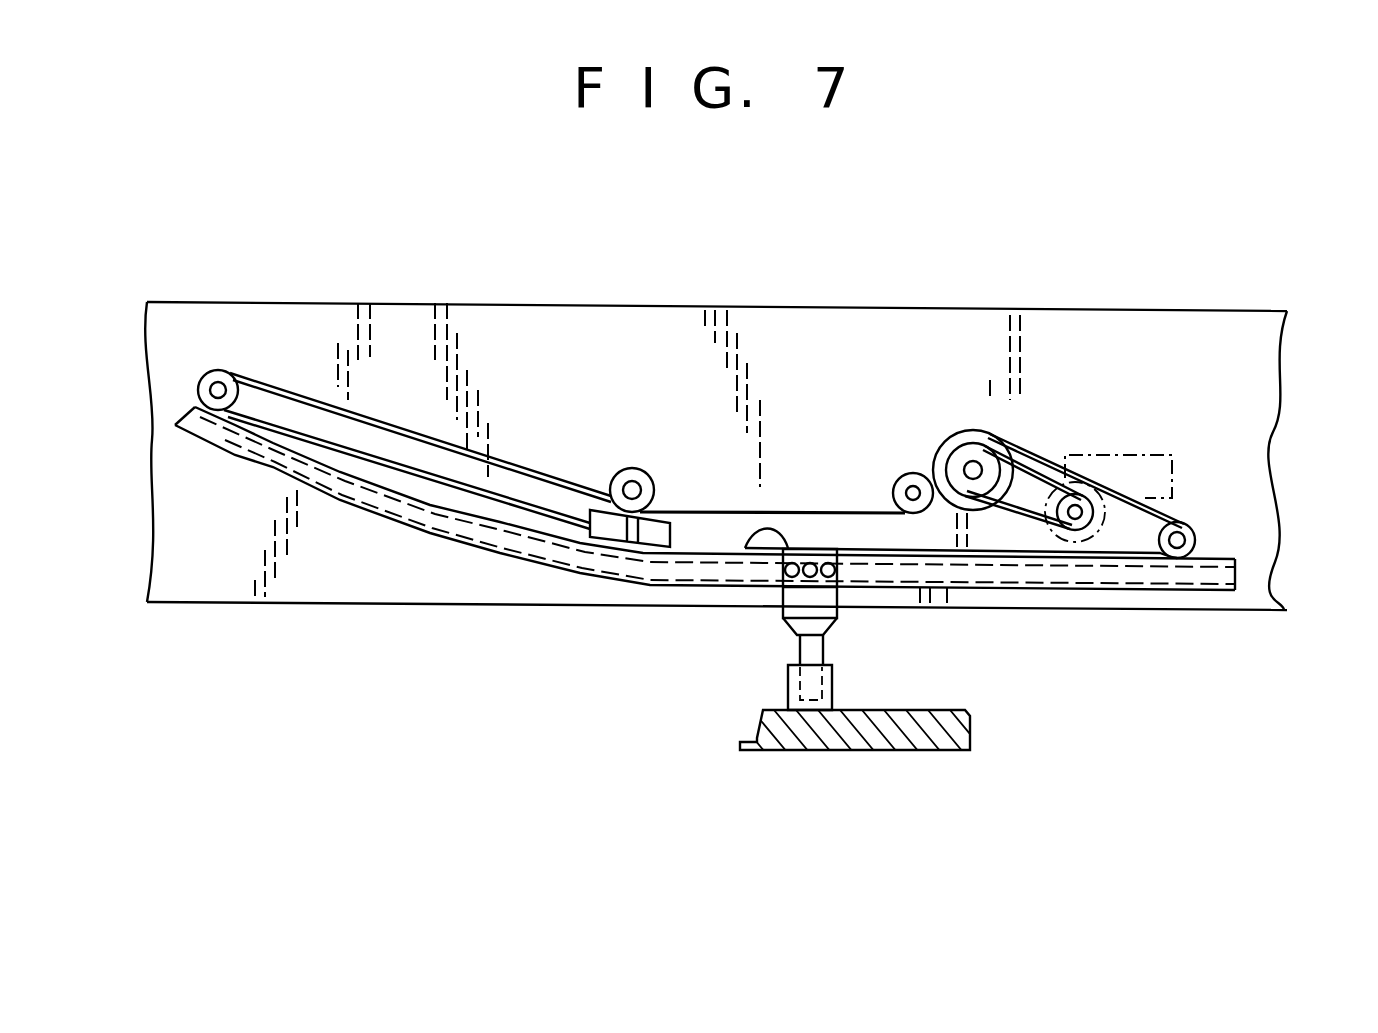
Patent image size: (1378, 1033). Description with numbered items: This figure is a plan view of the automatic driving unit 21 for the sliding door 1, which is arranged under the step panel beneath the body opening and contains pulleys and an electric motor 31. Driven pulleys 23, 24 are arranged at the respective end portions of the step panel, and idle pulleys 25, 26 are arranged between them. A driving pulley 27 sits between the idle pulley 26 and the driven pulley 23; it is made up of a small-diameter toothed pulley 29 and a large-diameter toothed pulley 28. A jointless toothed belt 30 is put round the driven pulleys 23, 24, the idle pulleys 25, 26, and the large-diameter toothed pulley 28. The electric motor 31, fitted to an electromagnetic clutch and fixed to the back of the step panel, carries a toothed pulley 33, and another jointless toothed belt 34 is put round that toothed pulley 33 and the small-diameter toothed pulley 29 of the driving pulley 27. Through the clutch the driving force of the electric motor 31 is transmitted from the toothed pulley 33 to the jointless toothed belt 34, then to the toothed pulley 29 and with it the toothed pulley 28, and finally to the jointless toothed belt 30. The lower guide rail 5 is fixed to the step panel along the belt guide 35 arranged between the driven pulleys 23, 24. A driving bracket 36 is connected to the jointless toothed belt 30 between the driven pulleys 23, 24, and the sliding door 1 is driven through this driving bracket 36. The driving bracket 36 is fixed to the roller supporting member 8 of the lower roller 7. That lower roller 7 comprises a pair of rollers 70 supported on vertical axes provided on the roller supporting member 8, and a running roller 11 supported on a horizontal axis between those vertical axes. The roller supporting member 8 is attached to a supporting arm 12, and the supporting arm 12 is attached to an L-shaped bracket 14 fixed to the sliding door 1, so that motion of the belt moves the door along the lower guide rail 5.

The sliding door 1 is at (842, 740).
The lower guide rail 5 is at (415, 540).
The lower roller 7 is at (842, 632).
The roller supporting member 8 is at (777, 620).
The running roller 11 is at (803, 547).
The supporting arm 12 is at (802, 648).
The L-shaped bracket 14 is at (833, 683).
The automatic driving unit 21 is at (780, 302).
The driven pulley 23 is at (1193, 527).
The driven pulley 24 is at (222, 372).
The idle pulley 25 is at (640, 467).
The idle pulley 26 is at (903, 475).
The driving pulley 27 is at (968, 423).
The large-diameter toothed pulley 28 is at (987, 428).
The small-diameter toothed pulley 29 is at (960, 447).
The jointless toothed belt 30 is at (693, 510).
The electric motor 31 is at (1113, 453).
The toothed pulley 33 is at (1118, 490).
The jointless toothed belt 34 is at (1035, 485).
The belt guide 35 is at (610, 525).
The driving bracket 36 is at (745, 548).
The rollers 70 is at (793, 550).